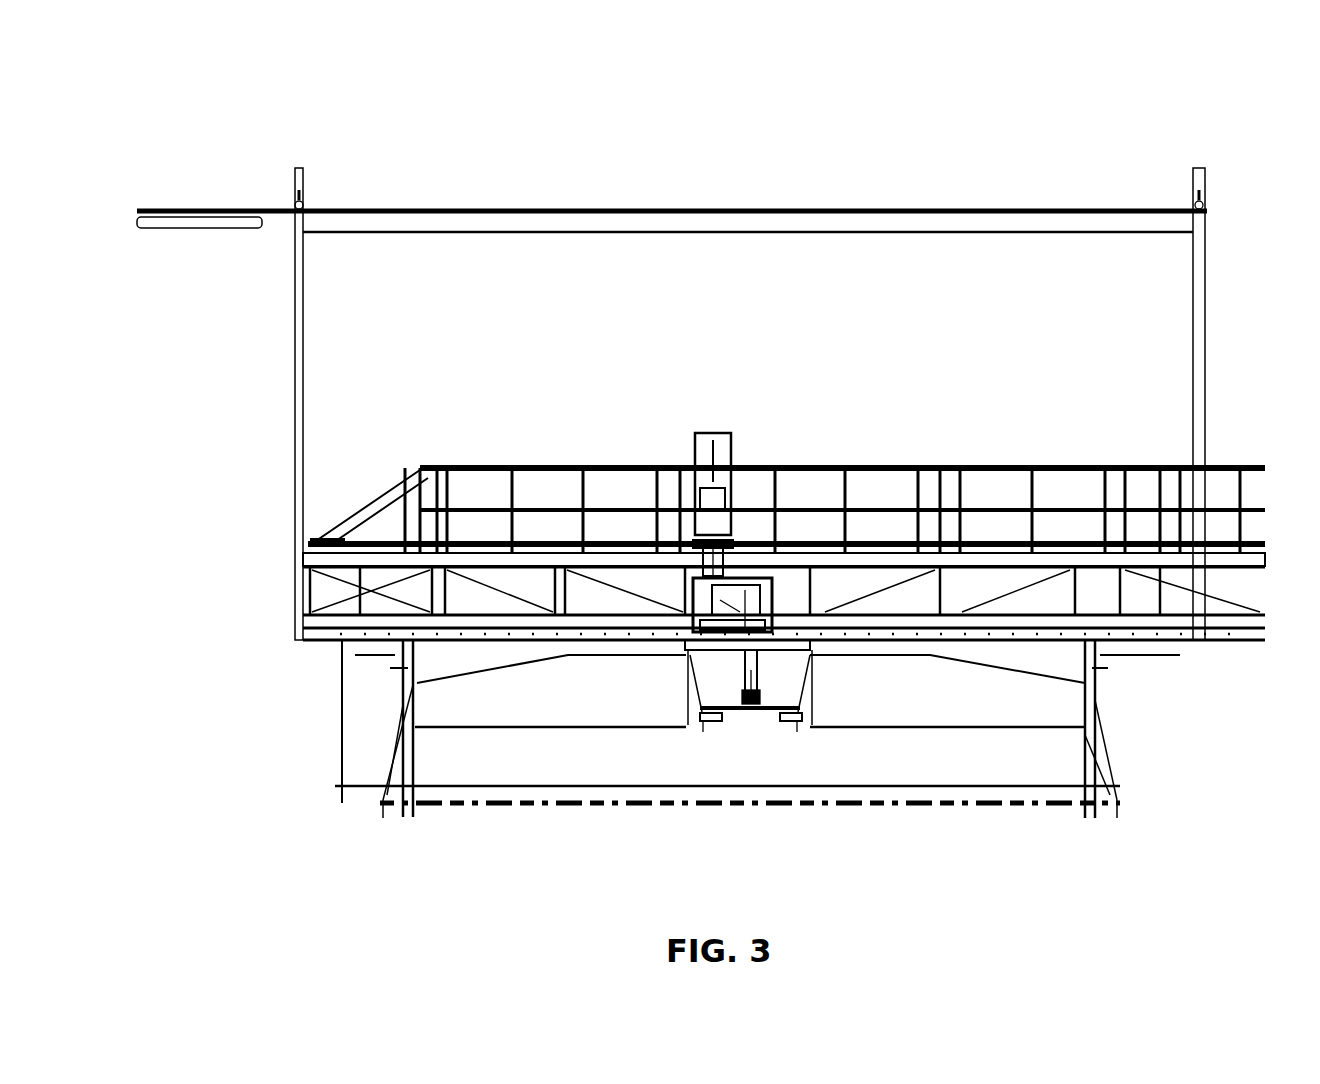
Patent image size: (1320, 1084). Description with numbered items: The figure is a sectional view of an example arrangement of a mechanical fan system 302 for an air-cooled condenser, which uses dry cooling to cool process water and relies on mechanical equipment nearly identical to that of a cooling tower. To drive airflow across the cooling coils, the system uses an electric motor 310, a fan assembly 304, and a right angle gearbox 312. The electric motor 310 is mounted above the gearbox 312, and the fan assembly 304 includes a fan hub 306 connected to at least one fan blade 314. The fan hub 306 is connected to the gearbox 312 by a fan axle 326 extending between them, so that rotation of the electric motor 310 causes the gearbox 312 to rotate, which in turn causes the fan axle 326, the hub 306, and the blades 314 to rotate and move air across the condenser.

The mechanical fan system 302 is at (340, 122).
The fan assembly 304 is at (637, 403).
The fan hub 306 is at (738, 712).
The electric motor 310 is at (720, 450).
The right angle gearbox 312 is at (760, 590).
The fan blade 314 is at (968, 695).
The fan axle 326 is at (752, 705).